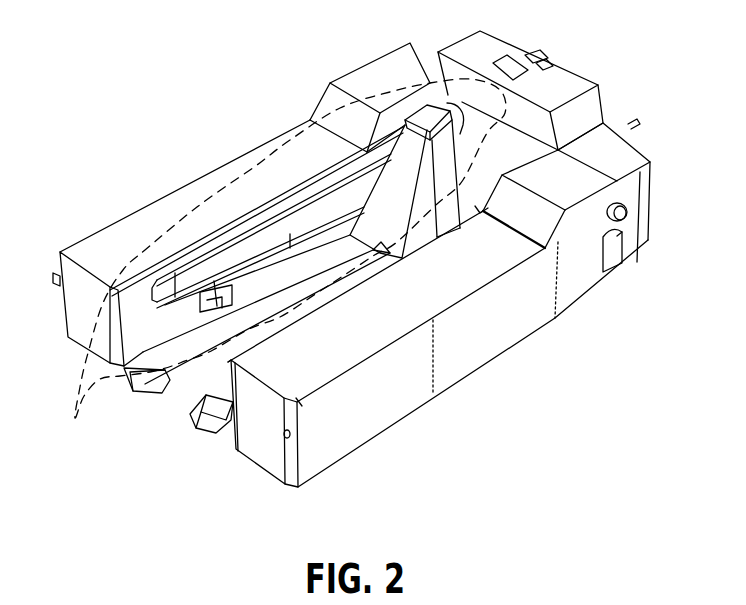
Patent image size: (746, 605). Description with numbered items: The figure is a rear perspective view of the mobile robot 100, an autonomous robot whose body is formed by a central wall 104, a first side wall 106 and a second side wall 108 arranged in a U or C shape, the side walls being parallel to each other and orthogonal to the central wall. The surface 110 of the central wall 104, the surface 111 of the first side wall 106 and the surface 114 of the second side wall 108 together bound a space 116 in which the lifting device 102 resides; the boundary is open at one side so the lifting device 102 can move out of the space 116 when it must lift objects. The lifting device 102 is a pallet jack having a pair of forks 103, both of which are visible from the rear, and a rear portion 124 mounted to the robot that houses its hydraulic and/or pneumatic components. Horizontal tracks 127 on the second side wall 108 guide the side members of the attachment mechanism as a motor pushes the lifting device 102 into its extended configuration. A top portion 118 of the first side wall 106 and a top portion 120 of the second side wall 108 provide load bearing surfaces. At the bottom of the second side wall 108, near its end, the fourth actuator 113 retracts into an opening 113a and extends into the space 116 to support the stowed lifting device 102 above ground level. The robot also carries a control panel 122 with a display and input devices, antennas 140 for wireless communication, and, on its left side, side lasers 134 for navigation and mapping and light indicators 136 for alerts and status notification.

The mobile robot 100 is at (96, 104).
The lifting device 102 is at (163, 315).
The pair of forks 103 is at (137, 393).
The central wall 104 is at (563, 80).
The first side wall 106 is at (367, 427).
The second side wall 108 is at (110, 224).
The surface of the central wall 110 is at (460, 70).
The surface of the first side wall 111 is at (375, 258).
The fourth actuator 113 is at (176, 278).
The opening 113a is at (300, 403).
The surface of the second side wall 114 is at (287, 173).
The space 116 is at (284, 261).
The top portion of the first side wall 118 is at (380, 318).
The top portion of the second side wall 120 is at (170, 203).
The control panel 122 is at (512, 65).
The rear portion 124 is at (430, 83).
The horizontal tracks 127 is at (237, 252).
The side lasers 134 is at (630, 214).
The light indicators 136 is at (610, 263).
The antennas 140 is at (587, 100).